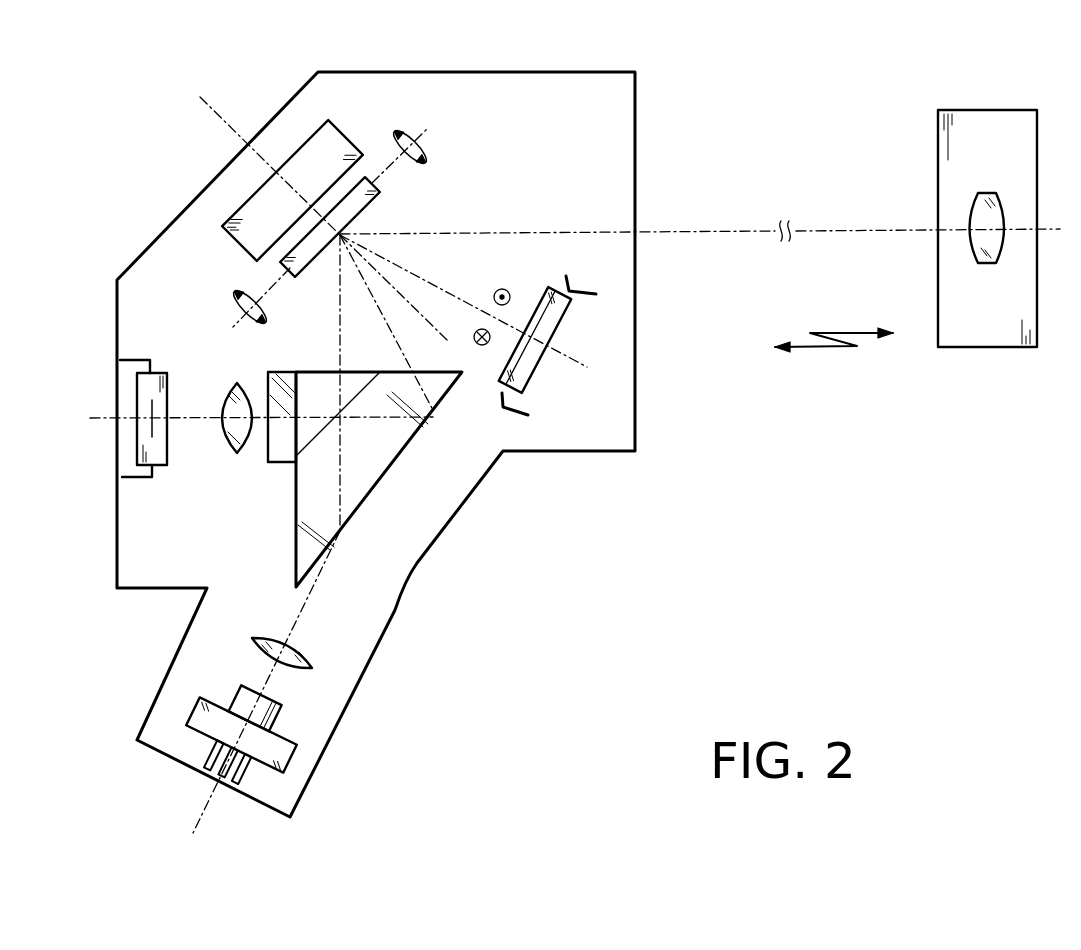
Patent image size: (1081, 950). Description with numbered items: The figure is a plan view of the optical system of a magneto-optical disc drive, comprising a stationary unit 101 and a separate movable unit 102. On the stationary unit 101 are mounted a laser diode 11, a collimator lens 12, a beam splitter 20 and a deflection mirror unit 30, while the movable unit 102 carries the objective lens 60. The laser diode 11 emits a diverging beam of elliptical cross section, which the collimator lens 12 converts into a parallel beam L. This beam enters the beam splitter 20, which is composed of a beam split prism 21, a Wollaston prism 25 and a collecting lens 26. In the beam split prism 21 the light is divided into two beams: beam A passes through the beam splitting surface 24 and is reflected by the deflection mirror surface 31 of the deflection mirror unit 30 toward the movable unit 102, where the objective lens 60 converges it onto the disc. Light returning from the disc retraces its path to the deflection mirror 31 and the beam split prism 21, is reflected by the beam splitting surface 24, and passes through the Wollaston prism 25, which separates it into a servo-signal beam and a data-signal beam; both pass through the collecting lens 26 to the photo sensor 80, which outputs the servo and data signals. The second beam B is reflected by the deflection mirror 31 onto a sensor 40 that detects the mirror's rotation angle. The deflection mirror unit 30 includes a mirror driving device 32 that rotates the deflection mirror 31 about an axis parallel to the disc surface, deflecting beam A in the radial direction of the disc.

The stationary unit 101 is at (560, 68).
The movable unit 102 is at (987, 110).
The objective lens 60 is at (990, 197).
The deflection mirror unit 30 is at (300, 128).
The deflection mirror surface 31 is at (367, 213).
The mirror driving device 32 is at (257, 232).
The sensor 40 is at (527, 360).
The beam splitter 20 is at (390, 498).
The beam split prism 21 is at (377, 437).
The beam splitting surface 24 is at (313, 452).
The Wollaston prism 25 is at (292, 375).
The collecting lens 26 is at (223, 437).
The photo sensor 80 is at (145, 390).
The collimator lens 12 is at (277, 632).
The laser diode 11 is at (225, 717).